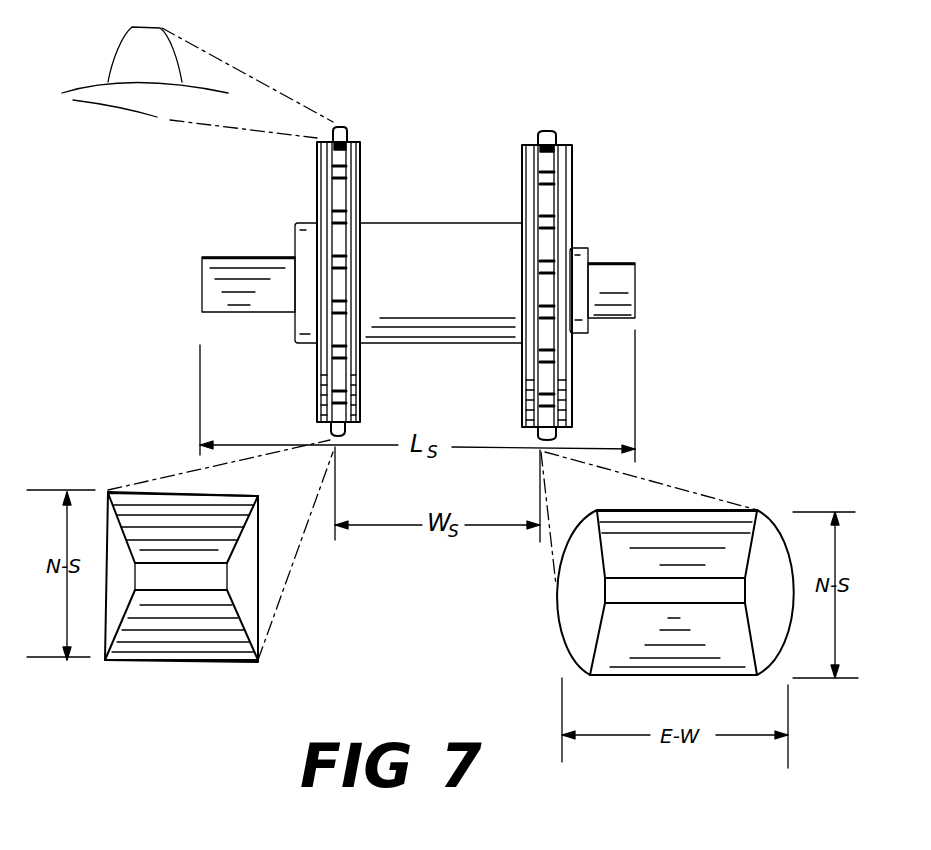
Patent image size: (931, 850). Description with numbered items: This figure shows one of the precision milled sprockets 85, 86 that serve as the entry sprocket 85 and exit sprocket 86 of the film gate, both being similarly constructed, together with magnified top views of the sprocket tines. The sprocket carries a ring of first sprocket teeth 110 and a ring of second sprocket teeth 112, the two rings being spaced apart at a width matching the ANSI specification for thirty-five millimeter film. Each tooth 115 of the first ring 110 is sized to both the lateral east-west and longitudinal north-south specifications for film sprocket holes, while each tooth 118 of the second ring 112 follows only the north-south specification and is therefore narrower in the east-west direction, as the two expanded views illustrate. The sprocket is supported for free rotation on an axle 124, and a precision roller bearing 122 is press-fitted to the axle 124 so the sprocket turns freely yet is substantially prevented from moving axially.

The entry sprocket 85 is at (689, 124).
The exit sprocket 86 is at (522, 198).
The ring of first sprocket teeth 110 is at (532, 110).
The ring of second sprocket teeth 112 is at (331, 105).
The first sprocket tooth 115 is at (546, 131).
The second sprocket tooth 118 is at (341, 127).
The precision roller bearing 122 is at (610, 262).
The axle 124 is at (273, 256).